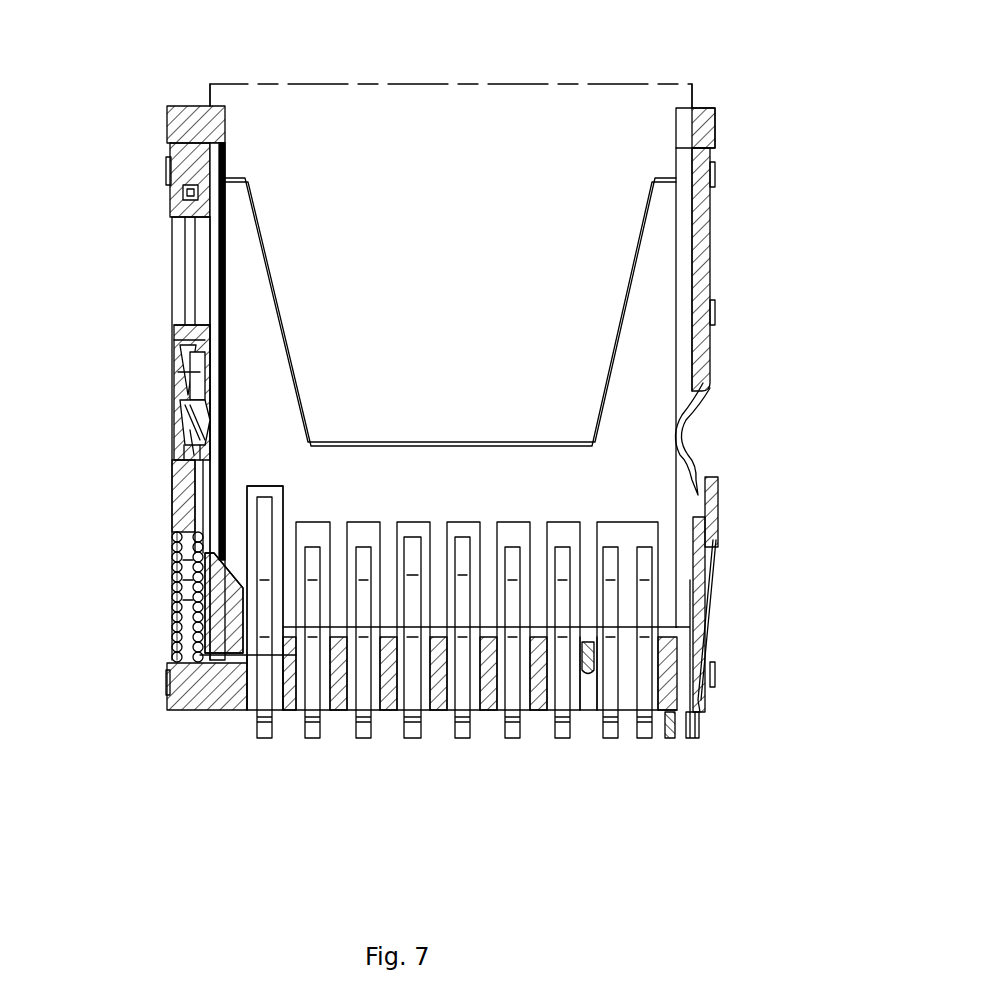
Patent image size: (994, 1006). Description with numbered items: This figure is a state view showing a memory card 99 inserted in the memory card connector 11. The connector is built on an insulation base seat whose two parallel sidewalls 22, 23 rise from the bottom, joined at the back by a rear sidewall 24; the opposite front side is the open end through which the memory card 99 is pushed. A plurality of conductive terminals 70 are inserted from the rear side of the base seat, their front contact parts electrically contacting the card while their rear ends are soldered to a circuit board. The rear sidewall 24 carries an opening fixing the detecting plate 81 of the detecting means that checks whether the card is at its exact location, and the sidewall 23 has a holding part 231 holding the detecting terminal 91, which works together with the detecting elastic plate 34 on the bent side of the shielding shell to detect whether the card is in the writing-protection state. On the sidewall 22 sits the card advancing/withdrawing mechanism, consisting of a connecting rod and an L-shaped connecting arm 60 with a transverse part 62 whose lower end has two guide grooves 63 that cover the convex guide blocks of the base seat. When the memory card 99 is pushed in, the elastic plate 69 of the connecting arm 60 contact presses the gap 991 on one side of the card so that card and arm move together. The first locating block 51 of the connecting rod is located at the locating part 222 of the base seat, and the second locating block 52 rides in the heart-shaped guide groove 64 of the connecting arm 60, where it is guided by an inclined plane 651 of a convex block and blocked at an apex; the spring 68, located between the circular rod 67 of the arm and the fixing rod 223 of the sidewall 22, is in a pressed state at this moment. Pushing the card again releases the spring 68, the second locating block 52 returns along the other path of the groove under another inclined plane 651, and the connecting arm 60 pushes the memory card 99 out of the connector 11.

The memory card connector 11 is at (775, 388).
The sidewall 22 is at (172, 143).
The locating part 222 is at (166, 170).
The sidewall 23 is at (700, 205).
The holding part 231 is at (732, 540).
The rear sidewall 24 is at (546, 736).
The detecting elastic plate 34 is at (702, 412).
The first locating block 51 is at (183, 195).
The second locating block 52 is at (186, 352).
The connecting arm 60 is at (140, 502).
The transverse part 62 is at (238, 648).
The guide grooves 63 is at (265, 600).
The guide groove 64 is at (190, 358).
The inclined plane 651 is at (185, 375).
The circular rod 67 is at (172, 566).
The spring 68 is at (172, 602).
The elastic plate 69 is at (186, 405).
The conductive terminals 70 is at (465, 740).
The detecting plate 81 is at (670, 740).
The detecting terminal 91 is at (712, 562).
The memory card 99 is at (456, 246).
The fixing rod 223 is at (172, 642).
The gap 991 is at (190, 440).